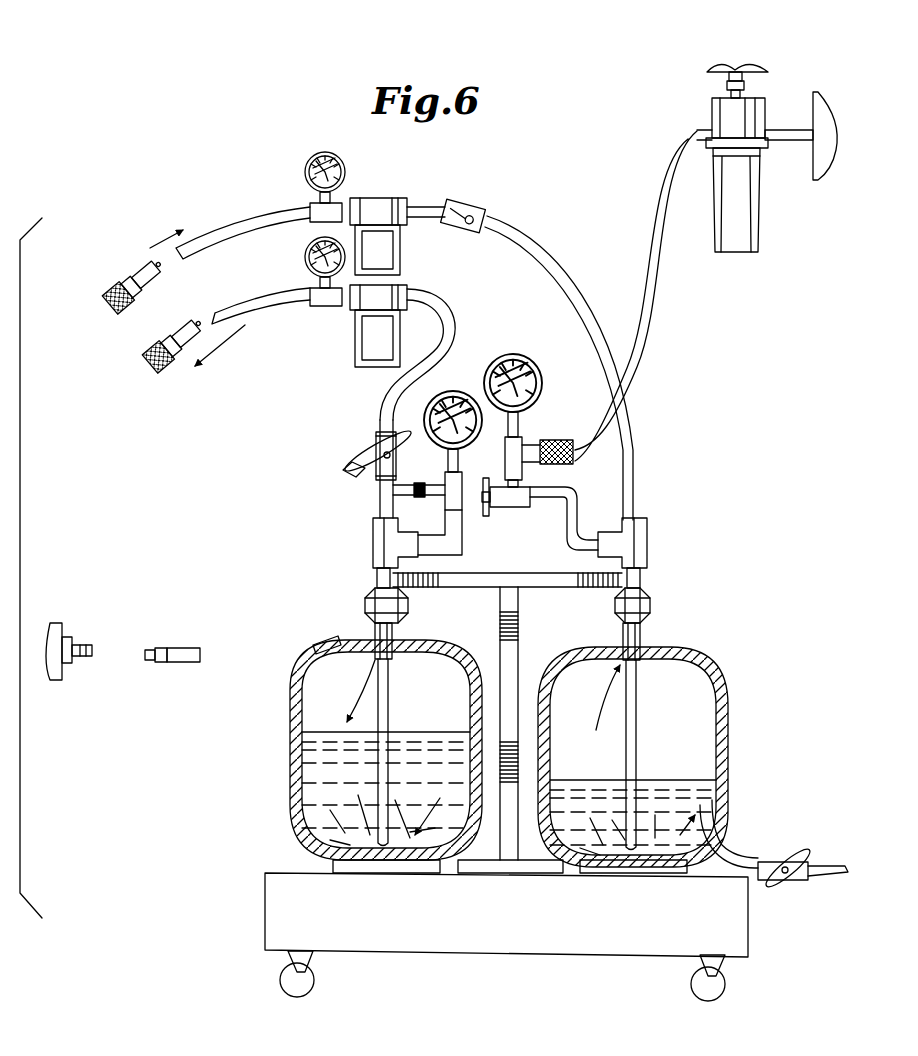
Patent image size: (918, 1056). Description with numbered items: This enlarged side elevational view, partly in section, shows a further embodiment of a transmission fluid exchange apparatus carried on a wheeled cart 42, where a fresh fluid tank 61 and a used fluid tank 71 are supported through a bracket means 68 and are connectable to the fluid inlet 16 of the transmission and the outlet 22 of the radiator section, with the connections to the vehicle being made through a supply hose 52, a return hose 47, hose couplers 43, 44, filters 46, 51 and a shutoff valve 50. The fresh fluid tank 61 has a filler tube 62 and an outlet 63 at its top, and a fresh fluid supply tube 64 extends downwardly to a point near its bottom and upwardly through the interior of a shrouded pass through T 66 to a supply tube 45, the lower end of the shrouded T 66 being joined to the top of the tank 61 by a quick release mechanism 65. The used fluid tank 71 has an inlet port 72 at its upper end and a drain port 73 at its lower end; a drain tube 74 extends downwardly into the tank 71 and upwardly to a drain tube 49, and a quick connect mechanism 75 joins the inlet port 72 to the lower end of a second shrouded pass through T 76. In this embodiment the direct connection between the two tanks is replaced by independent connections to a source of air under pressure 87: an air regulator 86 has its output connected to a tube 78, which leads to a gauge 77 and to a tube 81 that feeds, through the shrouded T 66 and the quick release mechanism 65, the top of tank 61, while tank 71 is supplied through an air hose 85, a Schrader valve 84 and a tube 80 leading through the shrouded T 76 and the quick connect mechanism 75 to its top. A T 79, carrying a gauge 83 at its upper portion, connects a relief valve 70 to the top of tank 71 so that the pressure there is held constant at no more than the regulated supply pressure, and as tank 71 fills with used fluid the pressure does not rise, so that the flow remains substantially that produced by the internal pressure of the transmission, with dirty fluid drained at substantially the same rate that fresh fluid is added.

The fluid inlet 16 is at (160, 648).
The outlet 22 is at (92, 650).
The wheeled cart 42 is at (302, 895).
The hose coupler 43 is at (112, 295).
The hose coupler 44 is at (152, 350).
The supply tube 45 is at (456, 327).
The filter 46 is at (355, 338).
The return hose 47 is at (258, 300).
The drain tube 49 is at (548, 262).
The shutoff valve 50 is at (480, 210).
The filter 51 is at (407, 252).
The supply hose 52 is at (222, 222).
The fresh fluid tank 61 is at (290, 745).
The filler tube 62 is at (318, 648).
The outlet 63 is at (393, 665).
The fresh fluid supply tube 64 is at (390, 697).
The quick release mechanism 65 is at (366, 598).
The shrouded pass through T 66 is at (373, 545).
The bracket means 68 is at (520, 628).
The relief valve 70 is at (452, 538).
The used fluid tank 71 is at (730, 752).
The inlet port 72 is at (660, 662).
The drain port 73 is at (720, 800).
The drain tube 74 is at (640, 712).
The quick connect mechanism 75 is at (650, 615).
The shrouded pass through T 76 is at (650, 540).
The gauge 77 is at (475, 372).
The tube 78 is at (345, 470).
The T 79 is at (510, 510).
The tube 80 is at (628, 524).
The tube 81 is at (445, 580).
The gauge 83 is at (545, 417).
The Schrader valve 84 is at (560, 465).
The air hose 85 is at (660, 298).
The air regulator 86 is at (763, 230).
The source of air under pressure 87 is at (815, 115).